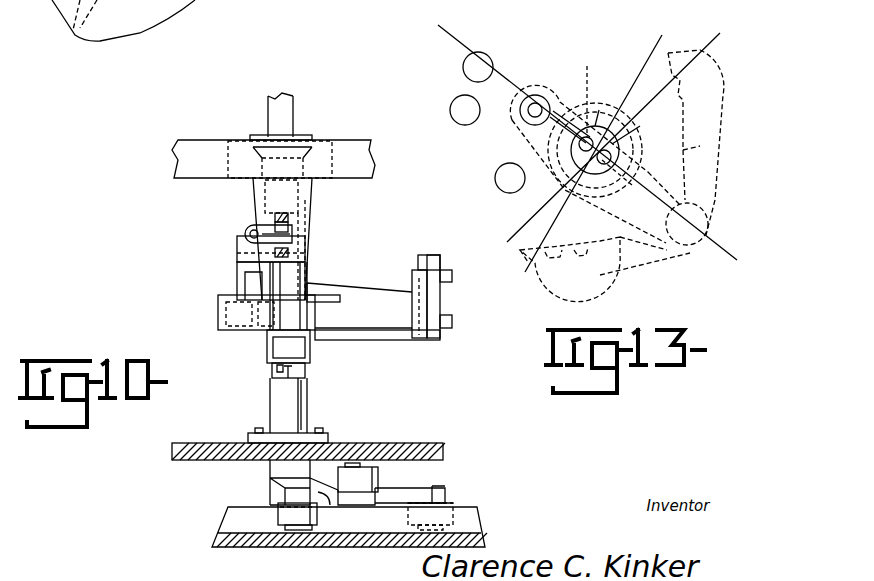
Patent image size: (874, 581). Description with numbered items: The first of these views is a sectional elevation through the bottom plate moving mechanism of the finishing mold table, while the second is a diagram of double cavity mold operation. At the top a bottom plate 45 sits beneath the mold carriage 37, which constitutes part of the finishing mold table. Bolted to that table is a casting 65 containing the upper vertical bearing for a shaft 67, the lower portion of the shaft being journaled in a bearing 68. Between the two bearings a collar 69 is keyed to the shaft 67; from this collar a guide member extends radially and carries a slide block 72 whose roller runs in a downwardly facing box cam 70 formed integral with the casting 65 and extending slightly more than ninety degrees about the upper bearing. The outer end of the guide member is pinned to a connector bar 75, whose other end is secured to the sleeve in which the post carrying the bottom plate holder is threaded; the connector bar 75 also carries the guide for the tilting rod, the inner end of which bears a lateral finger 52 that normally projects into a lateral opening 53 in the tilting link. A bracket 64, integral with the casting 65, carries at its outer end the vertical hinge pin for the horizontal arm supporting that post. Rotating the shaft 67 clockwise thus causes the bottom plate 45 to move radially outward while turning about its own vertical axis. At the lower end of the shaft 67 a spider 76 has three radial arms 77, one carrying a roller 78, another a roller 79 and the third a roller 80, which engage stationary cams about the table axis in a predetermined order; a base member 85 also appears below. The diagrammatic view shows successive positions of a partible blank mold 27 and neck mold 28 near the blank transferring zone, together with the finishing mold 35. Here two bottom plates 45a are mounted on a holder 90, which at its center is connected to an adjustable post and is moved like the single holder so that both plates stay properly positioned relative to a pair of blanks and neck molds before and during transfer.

In FIG. 10, the bottom plate 45 is at (315, 137).
In FIG. 10, the mold carriage 37 is at (353, 146).
In FIG. 10, the casting 65 is at (256, 201).
In FIG. 10, the lateral opening 53 is at (289, 221).
In FIG. 10, the lateral finger 52 is at (292, 236).
In FIG. 10, the connector bar 75 is at (380, 290).
In FIG. 10, the bracket 64 is at (361, 300).
In FIG. 10, the box cam 70 is at (218, 305).
In FIG. 10, the slide block 72 is at (267, 346).
In FIG. 10, the collar 69 is at (272, 372).
In FIG. 10, the bearing 68 is at (272, 403).
In FIG. 10, the spider 76 is at (262, 467).
In FIG. 10, the roller 80 is at (365, 479).
In FIG. 13, the roller 80 is at (450, 111).
In FIG. 10, the roller 78 is at (449, 508).
In FIG. 13, the roller 78 is at (502, 180).
In FIG. 10, the base 85 is at (476, 526).
In FIG. 10, the roller 79 is at (285, 513).
In FIG. 13, the roller 79 is at (486, 53).
In FIG. 10, the radial arms 77 is at (358, 512).
In FIG. 13, the shaft 67 is at (528, 119).
In FIG. 13, the neck mold 28 is at (568, 180).
In FIG. 13, the finishing mold 35 is at (577, 100).
In FIG. 13, the bottom plates 45a is at (600, 120).
In FIG. 13, the holder 90 is at (614, 143).
In FIG. 13, the blank mold 27 is at (710, 80).